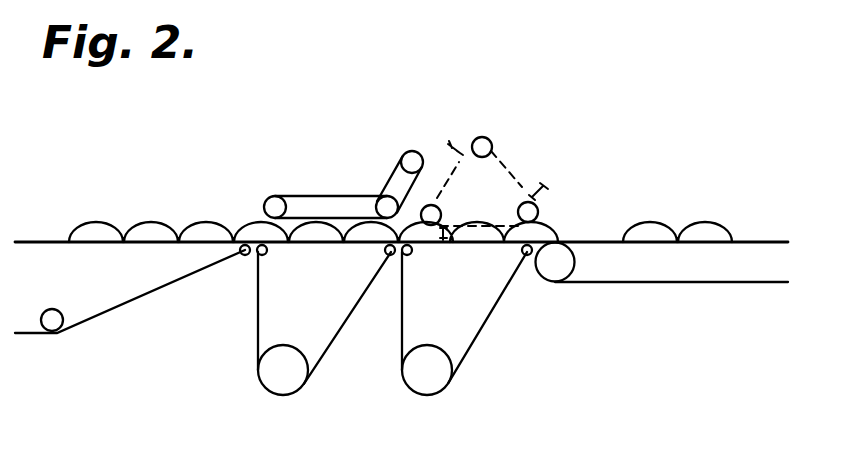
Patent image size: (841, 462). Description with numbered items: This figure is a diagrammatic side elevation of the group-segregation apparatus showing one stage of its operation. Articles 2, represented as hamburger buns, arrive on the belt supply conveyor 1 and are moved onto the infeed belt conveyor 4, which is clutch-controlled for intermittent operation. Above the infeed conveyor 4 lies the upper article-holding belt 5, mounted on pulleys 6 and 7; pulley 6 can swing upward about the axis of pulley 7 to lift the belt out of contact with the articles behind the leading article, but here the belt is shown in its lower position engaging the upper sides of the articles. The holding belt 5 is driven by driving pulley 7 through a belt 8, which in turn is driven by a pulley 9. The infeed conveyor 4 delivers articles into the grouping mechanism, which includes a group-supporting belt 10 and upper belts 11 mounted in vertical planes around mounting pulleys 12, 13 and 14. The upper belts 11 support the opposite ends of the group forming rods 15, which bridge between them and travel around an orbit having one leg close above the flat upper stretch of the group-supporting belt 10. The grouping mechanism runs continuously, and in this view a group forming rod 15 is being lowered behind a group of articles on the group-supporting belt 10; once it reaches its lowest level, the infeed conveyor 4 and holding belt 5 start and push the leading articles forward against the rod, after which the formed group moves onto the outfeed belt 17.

The belt supply conveyor 1 is at (42, 239).
The articles 2 is at (108, 222).
The infeed belt conveyor 4 is at (257, 318).
The upper article-holding belt 5 is at (305, 196).
The pulley 6 is at (275, 207).
The pulley 7 is at (386, 206).
The belt 8 is at (400, 170).
The pulley 9 is at (412, 162).
The group-supporting belt 10 is at (483, 334).
The upper belts 11 is at (508, 168).
The mounting pulley 12 is at (539, 213).
The mounting pulley 13 is at (438, 208).
The mounting pulley 14 is at (488, 138).
The group forming rods 15 is at (455, 146).
The outfeed belt 17 is at (632, 283).